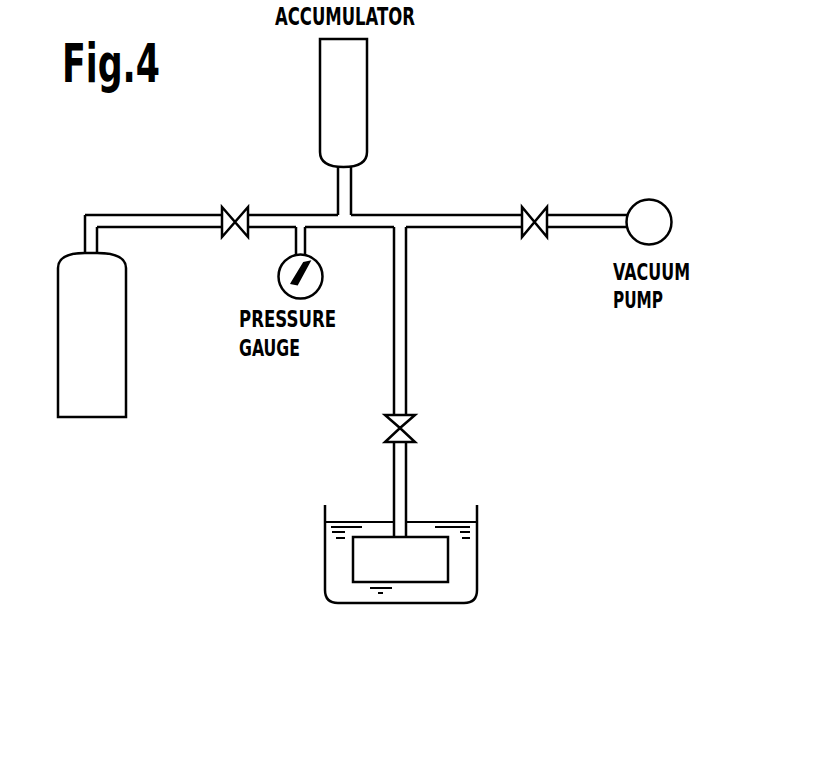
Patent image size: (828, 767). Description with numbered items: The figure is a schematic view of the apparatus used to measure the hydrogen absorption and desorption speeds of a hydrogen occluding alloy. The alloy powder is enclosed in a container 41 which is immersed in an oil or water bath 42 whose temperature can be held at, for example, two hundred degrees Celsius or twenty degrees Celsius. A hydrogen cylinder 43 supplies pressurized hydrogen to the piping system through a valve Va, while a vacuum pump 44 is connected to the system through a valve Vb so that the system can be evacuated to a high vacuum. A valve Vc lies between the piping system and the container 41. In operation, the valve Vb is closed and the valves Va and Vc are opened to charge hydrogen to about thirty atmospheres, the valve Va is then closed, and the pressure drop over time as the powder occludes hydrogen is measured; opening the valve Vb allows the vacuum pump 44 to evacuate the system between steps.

The container 41 is at (440, 561).
The bath 42 is at (452, 590).
The hydrogen cylinder 43 is at (81, 418).
The vacuum pump 44 is at (665, 194).
The valve Va is at (235, 205).
The valve Vb is at (533, 207).
The valve Vc is at (470, 427).